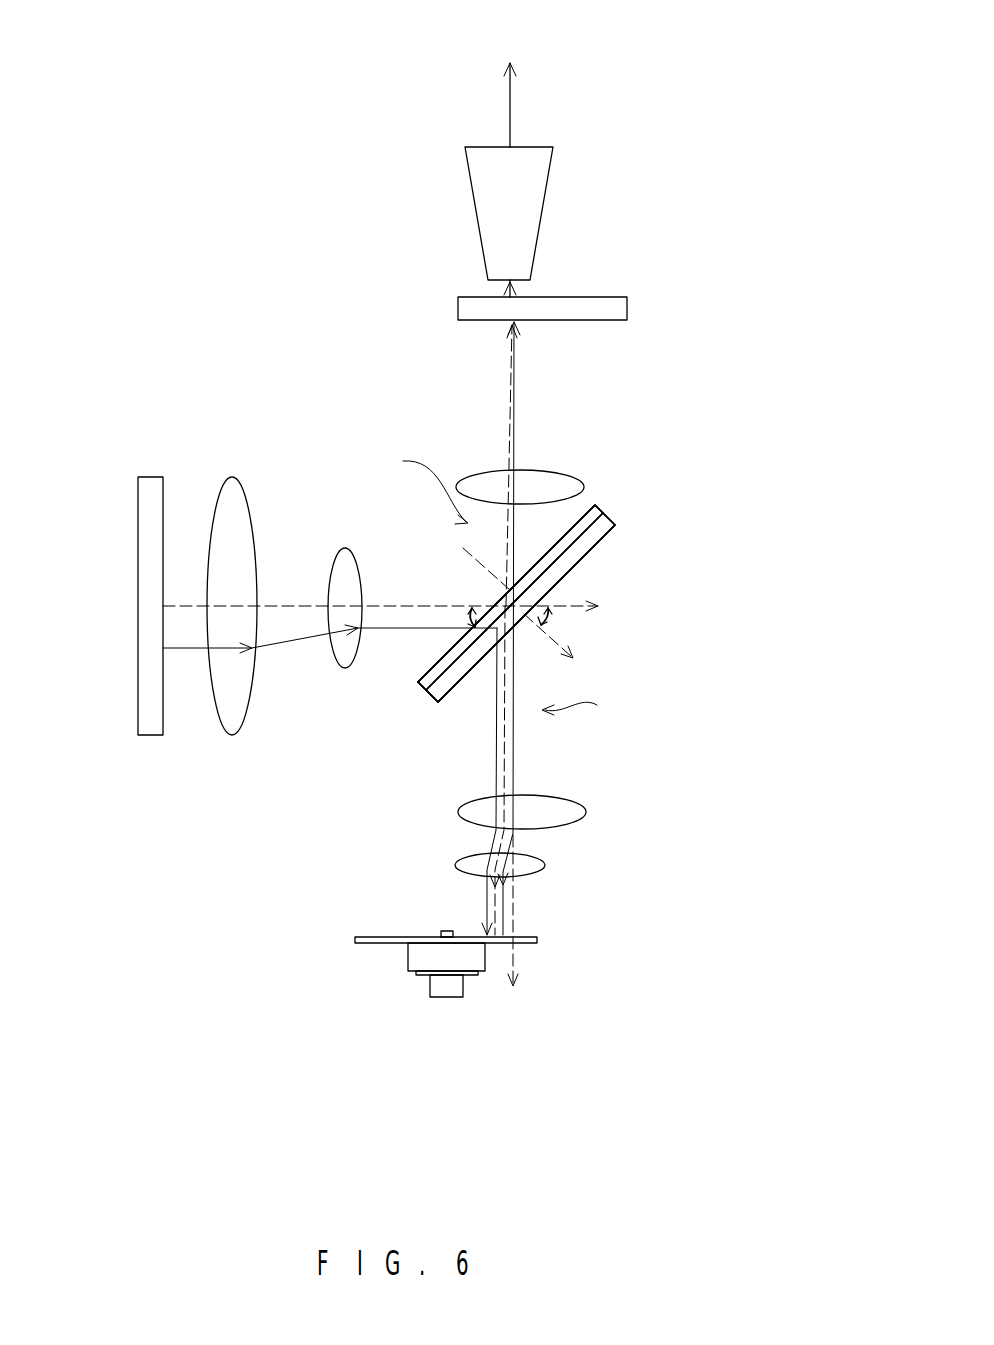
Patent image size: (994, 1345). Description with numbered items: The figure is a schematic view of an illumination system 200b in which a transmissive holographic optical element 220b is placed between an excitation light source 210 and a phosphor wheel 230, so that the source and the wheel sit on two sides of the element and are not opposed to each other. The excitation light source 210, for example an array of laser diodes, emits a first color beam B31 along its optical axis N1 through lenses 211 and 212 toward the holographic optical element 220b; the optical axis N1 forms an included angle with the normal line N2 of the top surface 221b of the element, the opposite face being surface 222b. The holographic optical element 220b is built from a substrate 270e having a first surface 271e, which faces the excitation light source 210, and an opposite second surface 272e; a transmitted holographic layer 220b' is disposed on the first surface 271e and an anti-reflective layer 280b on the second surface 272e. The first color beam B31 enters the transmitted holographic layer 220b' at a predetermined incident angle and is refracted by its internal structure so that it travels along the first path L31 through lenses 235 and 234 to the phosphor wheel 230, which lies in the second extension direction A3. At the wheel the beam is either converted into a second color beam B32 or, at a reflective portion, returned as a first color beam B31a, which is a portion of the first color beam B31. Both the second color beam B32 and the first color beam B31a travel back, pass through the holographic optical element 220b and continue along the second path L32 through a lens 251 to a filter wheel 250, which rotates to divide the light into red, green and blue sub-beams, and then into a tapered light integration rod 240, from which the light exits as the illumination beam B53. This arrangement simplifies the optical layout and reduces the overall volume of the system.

The illumination system 200b is at (112, 48).
The illumination beam B53 is at (510, 105).
The light integration rod 240 is at (523, 185).
The filter wheel 250 is at (603, 310).
The lens 251 is at (480, 482).
The second color beam B32 is at (514, 760).
The second extension direction A3 is at (515, 963).
The first color beam B31a is at (505, 840).
The excitation light source 210 is at (152, 487).
The lens 211 is at (230, 723).
The lens 212 is at (345, 563).
The first color beam B31 is at (188, 650).
The optical axis N1 is at (580, 603).
The normal line N2 is at (575, 660).
The second path L32 is at (403, 483).
The first path L31 is at (601, 715).
The transmitted holographic layer 220b' is at (601, 542).
The anti-reflective layer 280b is at (607, 530).
The top surface 221b is at (590, 500).
The surface 222b is at (607, 536).
The holographic optical element 220b is at (631, 603).
The first surface 271e is at (426, 672).
The substrate 270e is at (421, 690).
The second surface 272e is at (446, 696).
The lens 235 is at (477, 810).
The lens 234 is at (477, 865).
The phosphor wheel 230 is at (372, 937).